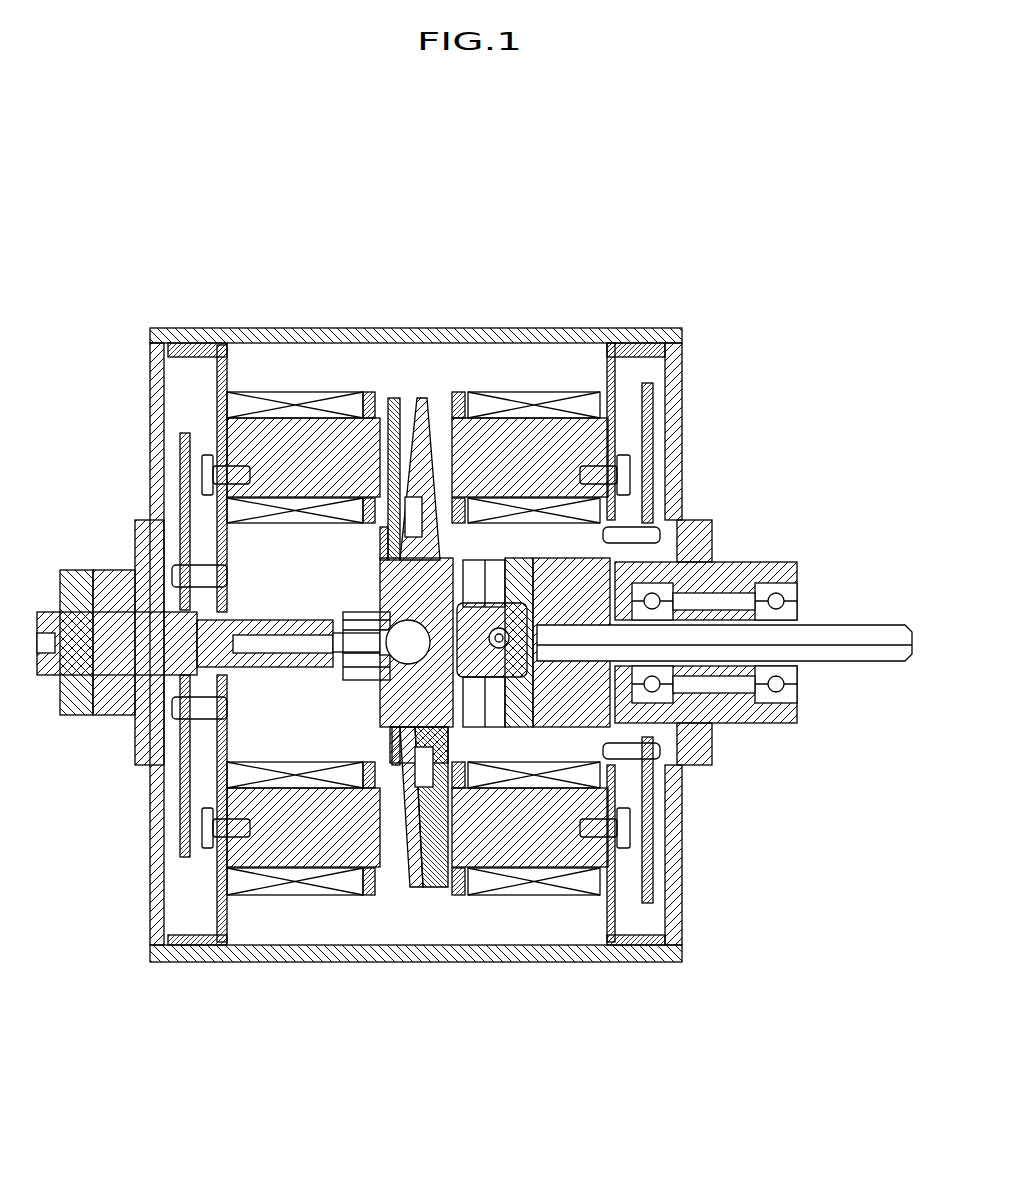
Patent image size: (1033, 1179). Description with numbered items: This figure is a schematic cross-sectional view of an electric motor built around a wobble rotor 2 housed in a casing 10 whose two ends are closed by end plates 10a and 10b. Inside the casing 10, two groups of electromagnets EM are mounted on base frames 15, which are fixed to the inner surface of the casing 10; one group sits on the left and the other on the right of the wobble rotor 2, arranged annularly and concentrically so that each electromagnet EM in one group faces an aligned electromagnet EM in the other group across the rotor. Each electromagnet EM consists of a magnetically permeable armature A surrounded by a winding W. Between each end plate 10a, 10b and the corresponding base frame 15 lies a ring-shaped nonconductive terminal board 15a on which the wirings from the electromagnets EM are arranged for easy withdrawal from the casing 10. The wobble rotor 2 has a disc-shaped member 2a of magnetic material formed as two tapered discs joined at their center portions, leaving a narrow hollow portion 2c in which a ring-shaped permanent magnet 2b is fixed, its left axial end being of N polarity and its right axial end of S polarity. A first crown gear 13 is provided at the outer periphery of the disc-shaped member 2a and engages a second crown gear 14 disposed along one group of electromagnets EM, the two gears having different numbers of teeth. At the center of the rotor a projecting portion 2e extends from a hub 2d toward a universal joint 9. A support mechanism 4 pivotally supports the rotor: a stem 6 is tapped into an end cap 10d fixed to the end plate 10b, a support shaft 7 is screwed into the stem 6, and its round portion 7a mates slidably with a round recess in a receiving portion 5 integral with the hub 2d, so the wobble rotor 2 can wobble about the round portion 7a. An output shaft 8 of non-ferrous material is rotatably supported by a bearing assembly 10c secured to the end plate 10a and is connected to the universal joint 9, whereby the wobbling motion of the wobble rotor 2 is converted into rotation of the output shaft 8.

The wobble rotor 2 is at (446, 604).
The disc-shaped member 2a is at (425, 400).
The permanent magnet 2b is at (395, 398).
The hollow portion 2c is at (400, 398).
The hub 2d is at (470, 560).
The projecting portion 2e is at (640, 538).
The support mechanism 4 is at (300, 610).
The receiving portion 5 is at (465, 603).
The stem 6 is at (230, 622).
The support shaft 7 is at (318, 630).
The round portion 7a is at (360, 612).
The output shaft 8 is at (872, 632).
The universal joint 9 is at (522, 557).
The casing 10 is at (443, 600).
The end plate 10a is at (688, 360).
The end plate 10b is at (135, 345).
The bearing assembly 10c is at (710, 553).
The end cap 10d is at (118, 590).
The first crown gear 13 is at (372, 392).
The second crown gear 14 is at (345, 392).
The base frame 15 is at (215, 350).
The terminal board 15a is at (175, 350).
The electromagnet EM is at (416, 660).
The armature A is at (290, 950).
The winding W is at (320, 950).
The N polarity N is at (388, 455).
The S polarity S is at (450, 790).